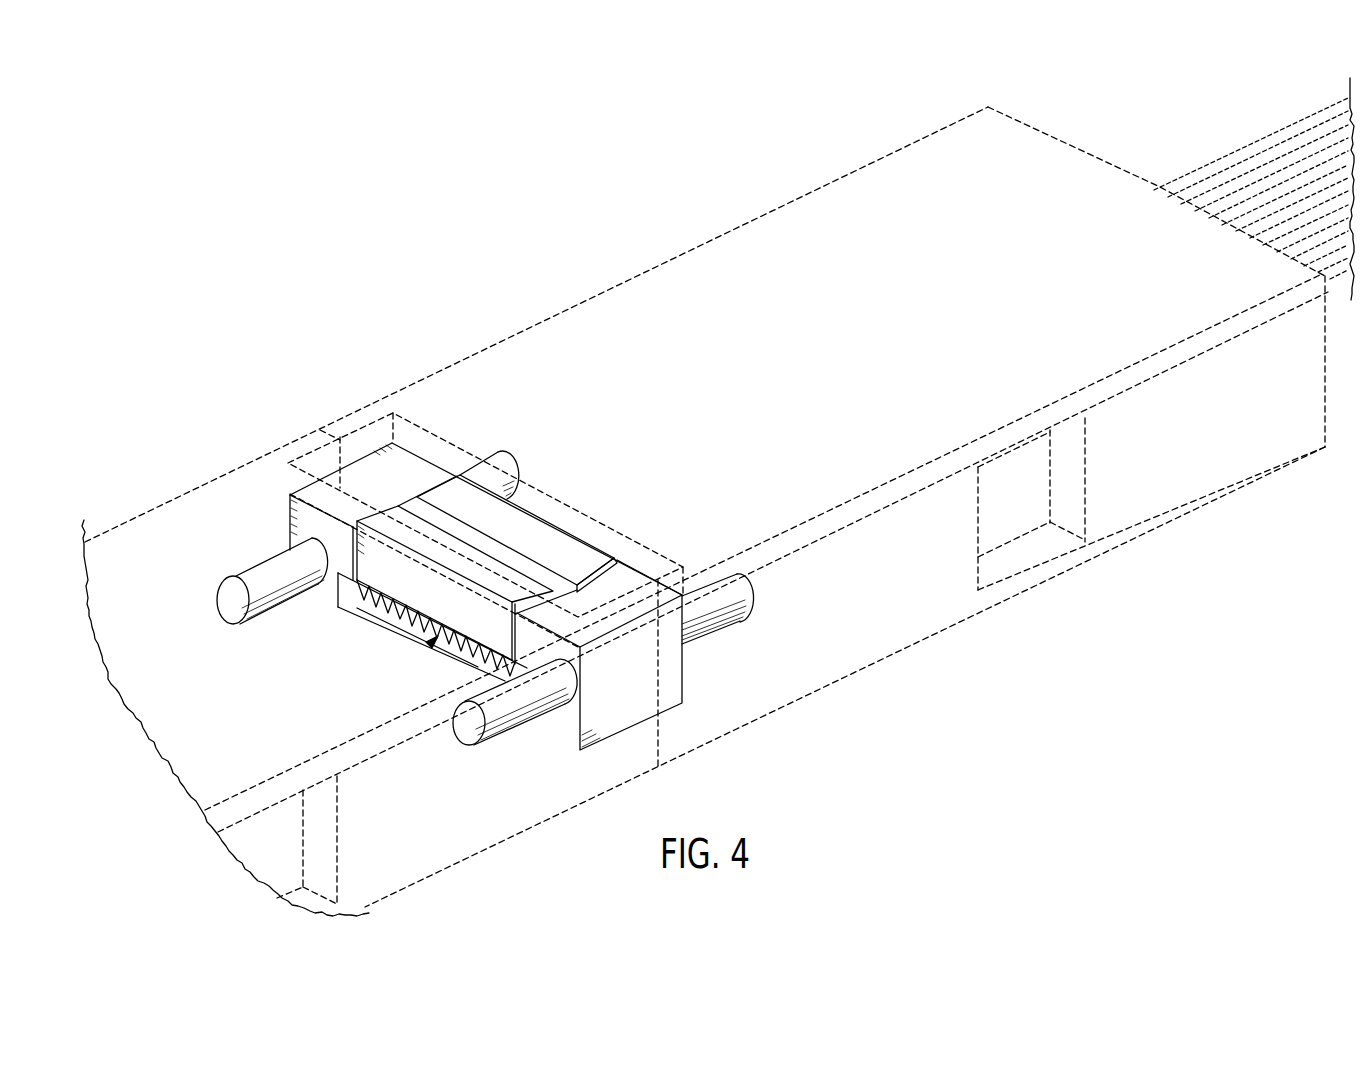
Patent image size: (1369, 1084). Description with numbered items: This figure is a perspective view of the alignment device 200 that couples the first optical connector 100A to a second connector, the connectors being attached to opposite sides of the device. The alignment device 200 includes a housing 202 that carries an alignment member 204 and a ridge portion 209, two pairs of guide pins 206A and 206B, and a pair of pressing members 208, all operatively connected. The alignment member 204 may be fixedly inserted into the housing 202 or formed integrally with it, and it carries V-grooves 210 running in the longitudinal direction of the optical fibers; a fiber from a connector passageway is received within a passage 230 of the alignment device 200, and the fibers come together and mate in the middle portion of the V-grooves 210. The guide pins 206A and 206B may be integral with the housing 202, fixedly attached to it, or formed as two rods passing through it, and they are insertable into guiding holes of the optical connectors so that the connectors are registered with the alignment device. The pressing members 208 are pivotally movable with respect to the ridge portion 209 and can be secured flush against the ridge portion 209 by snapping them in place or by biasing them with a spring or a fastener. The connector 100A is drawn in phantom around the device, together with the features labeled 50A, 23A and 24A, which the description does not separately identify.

The first optical connector 100A is at (718, 260).
The adjacent component 50A is at (1188, 146).
The alignment device 200 is at (477, 595).
The housing 202 is at (627, 723).
The alignment member 204 is at (355, 607).
The guide pins 206A is at (497, 452).
The guide pins 206B is at (245, 578).
The pressing members 208 is at (385, 548).
The ridge portion 209 is at (493, 548).
The V-grooves 210 is at (400, 610).
The passage 230 is at (430, 645).
The wall edge 23A is at (660, 742).
The opening 24A is at (1033, 549).